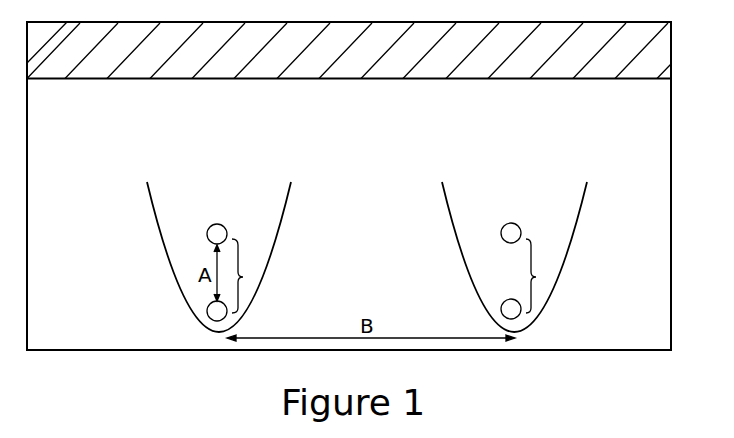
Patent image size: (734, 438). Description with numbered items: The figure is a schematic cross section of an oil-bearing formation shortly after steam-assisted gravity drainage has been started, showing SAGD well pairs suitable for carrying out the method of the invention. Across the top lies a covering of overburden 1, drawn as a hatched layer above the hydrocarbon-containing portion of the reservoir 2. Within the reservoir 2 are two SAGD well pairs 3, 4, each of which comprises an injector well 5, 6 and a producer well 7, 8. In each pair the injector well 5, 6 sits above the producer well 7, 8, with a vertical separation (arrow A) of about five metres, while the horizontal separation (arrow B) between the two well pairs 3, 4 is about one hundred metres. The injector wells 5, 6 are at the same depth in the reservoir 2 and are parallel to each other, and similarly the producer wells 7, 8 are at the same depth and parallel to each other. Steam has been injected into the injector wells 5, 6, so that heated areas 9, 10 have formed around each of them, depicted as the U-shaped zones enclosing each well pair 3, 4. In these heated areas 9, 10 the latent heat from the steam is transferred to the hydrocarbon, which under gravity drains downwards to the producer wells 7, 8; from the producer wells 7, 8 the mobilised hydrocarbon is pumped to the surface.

The overburden 1 is at (645, 58).
The reservoir 2 is at (642, 108).
The SAGD well pair 3 is at (540, 276).
The SAGD well pair 4 is at (246, 276).
The injector well 5 is at (208, 229).
The injector well 6 is at (502, 230).
The producer well 7 is at (213, 302).
The producer well 8 is at (505, 300).
The heated area 9 is at (217, 178).
The heated area 10 is at (513, 177).